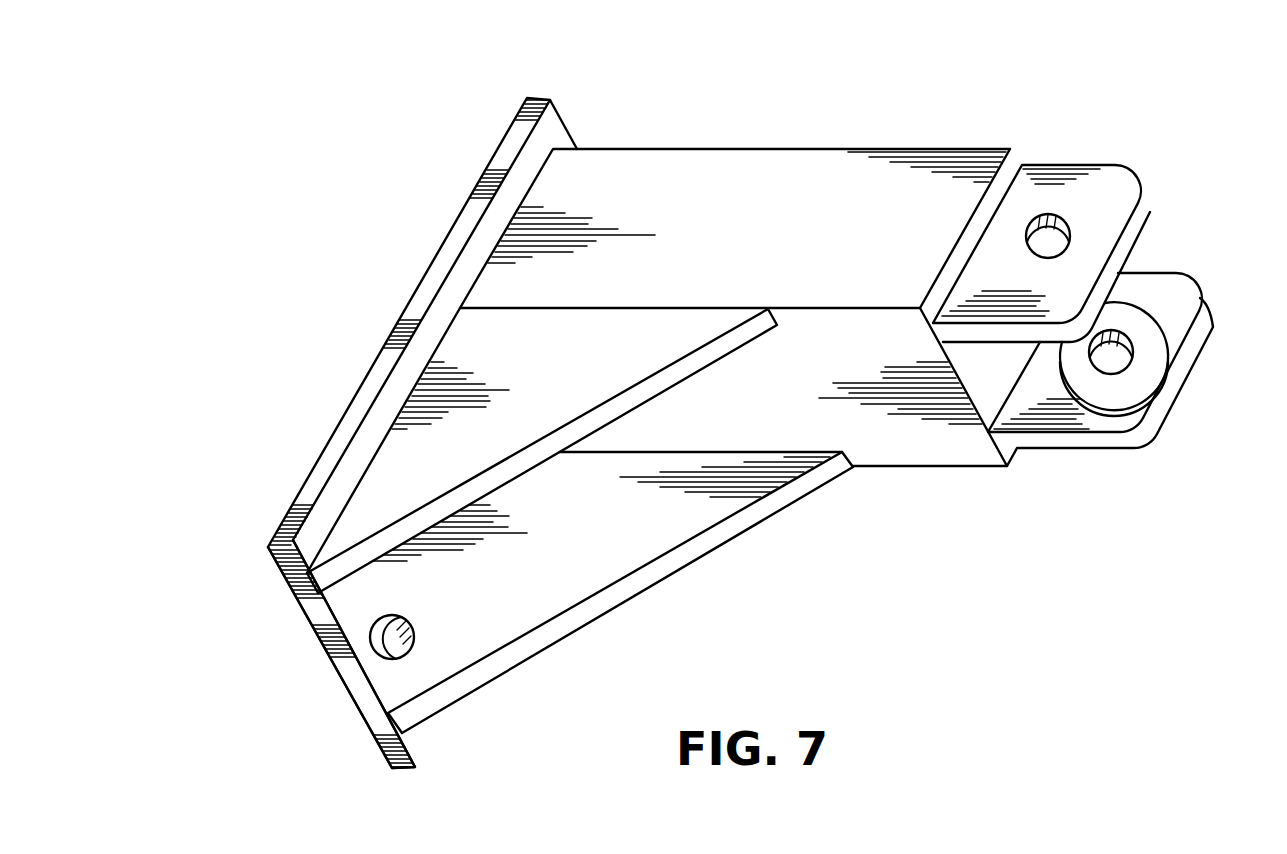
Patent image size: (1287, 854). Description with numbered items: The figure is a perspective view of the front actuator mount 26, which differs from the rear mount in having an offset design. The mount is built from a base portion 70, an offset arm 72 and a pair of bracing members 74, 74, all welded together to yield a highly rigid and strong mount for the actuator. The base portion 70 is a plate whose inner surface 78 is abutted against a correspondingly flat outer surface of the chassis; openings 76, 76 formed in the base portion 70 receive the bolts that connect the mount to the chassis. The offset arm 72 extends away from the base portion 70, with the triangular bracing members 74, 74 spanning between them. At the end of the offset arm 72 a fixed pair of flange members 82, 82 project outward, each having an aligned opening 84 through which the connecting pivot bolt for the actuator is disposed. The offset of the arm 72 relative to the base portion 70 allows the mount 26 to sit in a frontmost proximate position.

The front actuator mount 26 is at (935, 137).
The base portion 70 is at (340, 669).
The offset arm 72 is at (742, 398).
The bracing members 74 is at (566, 358).
The openings 76 is at (370, 635).
The inner surface 78 is at (368, 725).
The flange members 82 is at (1010, 333).
The aligned opening 84 is at (1050, 214).